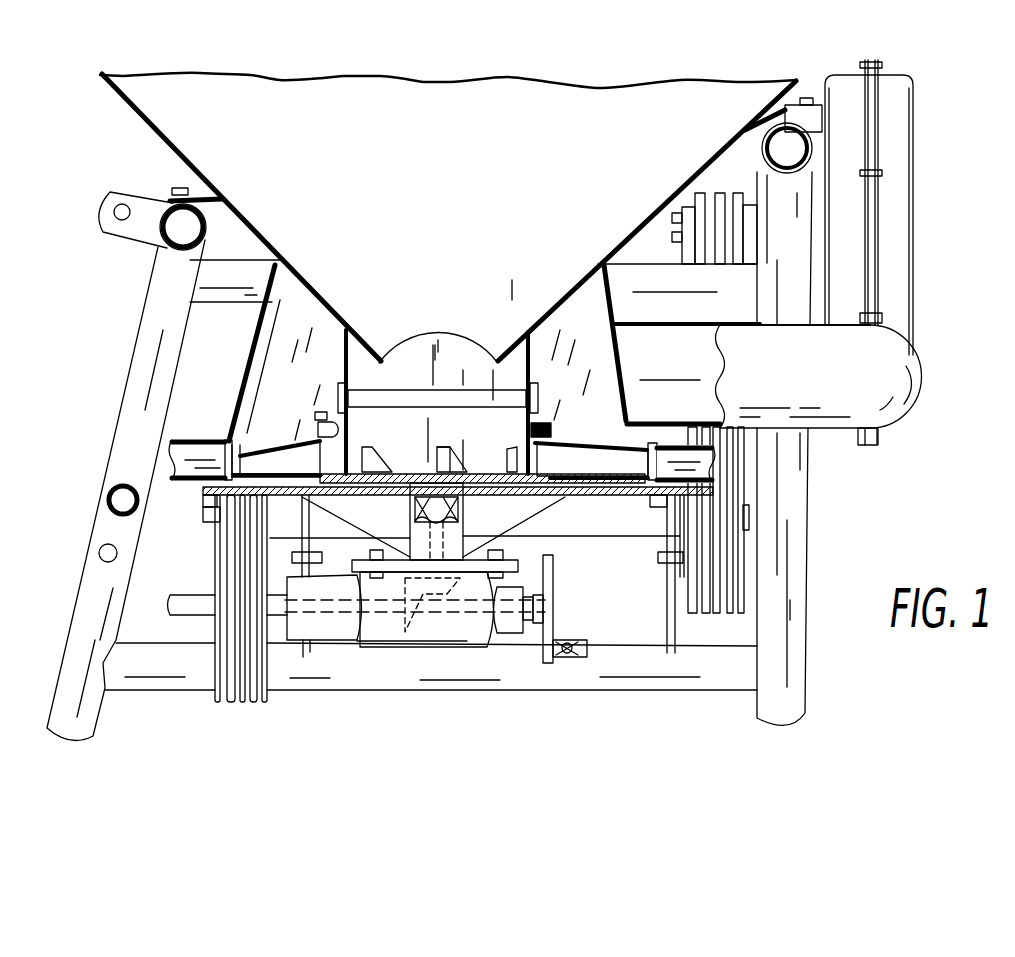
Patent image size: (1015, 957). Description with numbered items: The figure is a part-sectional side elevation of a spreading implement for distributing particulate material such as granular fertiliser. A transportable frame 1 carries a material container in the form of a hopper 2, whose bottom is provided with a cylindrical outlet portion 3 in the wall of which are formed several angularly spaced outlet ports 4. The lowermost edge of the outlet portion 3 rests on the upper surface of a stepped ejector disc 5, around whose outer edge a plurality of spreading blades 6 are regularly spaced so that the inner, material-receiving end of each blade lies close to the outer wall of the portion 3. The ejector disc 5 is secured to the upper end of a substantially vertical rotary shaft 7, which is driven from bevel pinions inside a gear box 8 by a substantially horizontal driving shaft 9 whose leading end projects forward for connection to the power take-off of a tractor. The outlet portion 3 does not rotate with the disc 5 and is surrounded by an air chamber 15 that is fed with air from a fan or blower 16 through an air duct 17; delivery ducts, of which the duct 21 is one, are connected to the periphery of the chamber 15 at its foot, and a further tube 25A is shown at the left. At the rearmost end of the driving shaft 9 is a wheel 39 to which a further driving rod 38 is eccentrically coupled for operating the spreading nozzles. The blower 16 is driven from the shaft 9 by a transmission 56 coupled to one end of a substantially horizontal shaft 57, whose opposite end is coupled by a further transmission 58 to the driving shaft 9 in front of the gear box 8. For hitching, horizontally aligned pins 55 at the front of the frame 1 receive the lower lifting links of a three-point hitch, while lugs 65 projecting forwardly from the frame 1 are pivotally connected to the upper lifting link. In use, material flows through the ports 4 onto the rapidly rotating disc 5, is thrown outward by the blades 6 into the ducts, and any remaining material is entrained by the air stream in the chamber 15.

The transportable frame 1 is at (116, 386).
The hopper 2 is at (118, 96).
The cylindrical outlet portion 3 is at (350, 419).
The outlet ports 4 is at (450, 458).
The stepped ejector disc 5 is at (384, 478).
The spreading blades 6 is at (279, 446).
The rotary shaft 7 is at (456, 520).
The gear box 8 is at (373, 641).
The driving shaft 9 is at (168, 605).
The air chamber 15 is at (257, 331).
The fan or blower 16 is at (900, 147).
The air duct 17 is at (898, 390).
The delivery duct 21 is at (680, 424).
The tube 25A is at (214, 441).
The further driving rod 38 is at (574, 641).
The wheel 39 is at (554, 567).
The pins 55 is at (97, 551).
The transmission 56 is at (740, 491).
The horizontal shaft 57 is at (749, 520).
The further transmission 58 is at (213, 541).
The lugs 65 is at (126, 181).